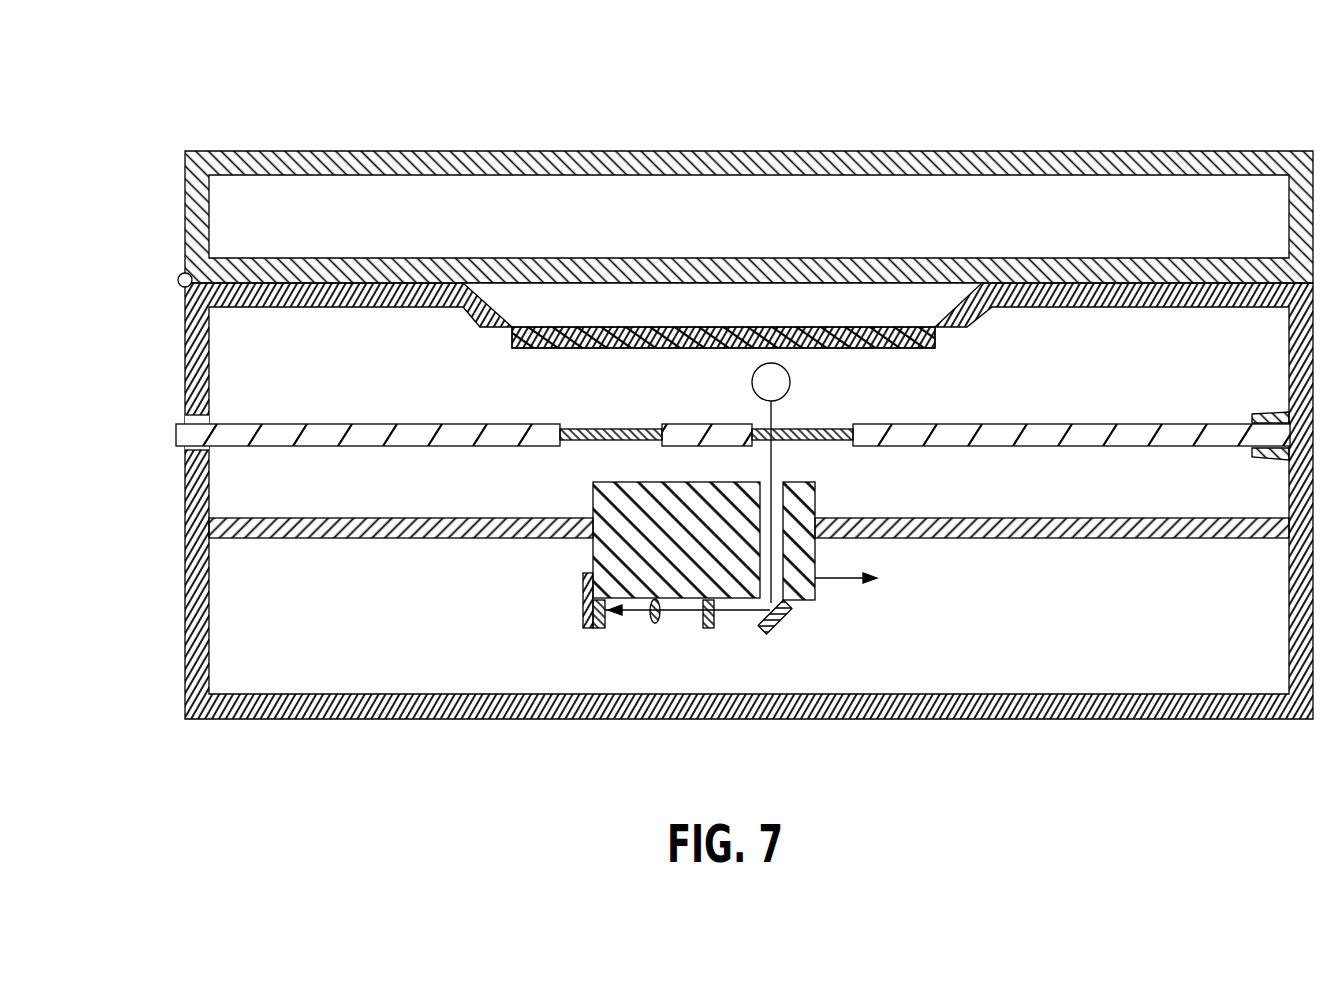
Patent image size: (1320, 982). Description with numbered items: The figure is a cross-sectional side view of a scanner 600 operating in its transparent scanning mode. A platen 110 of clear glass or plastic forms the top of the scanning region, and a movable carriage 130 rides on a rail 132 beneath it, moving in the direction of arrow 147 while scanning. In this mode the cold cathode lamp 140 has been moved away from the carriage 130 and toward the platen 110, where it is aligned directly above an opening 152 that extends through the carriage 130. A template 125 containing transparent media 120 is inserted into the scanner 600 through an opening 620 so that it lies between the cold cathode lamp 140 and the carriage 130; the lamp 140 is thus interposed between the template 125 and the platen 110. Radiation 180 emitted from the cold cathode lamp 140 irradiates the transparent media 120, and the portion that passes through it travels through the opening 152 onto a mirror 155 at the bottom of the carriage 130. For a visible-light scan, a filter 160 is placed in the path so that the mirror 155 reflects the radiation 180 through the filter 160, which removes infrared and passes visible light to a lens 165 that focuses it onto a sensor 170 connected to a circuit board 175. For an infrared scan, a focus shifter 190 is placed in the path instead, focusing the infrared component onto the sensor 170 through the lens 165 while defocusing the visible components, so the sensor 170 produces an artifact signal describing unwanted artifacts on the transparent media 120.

The scanner 600 is at (772, 103).
The platen 110 is at (528, 350).
The transparent media 120 is at (612, 428).
The template 125 is at (375, 428).
The carriage 130 is at (603, 548).
The rail 132 is at (900, 518).
The cold cathode lamp 140 is at (790, 383).
The arrow 147 is at (845, 583).
The opening 152 is at (777, 487).
The mirror 155 is at (790, 612).
The filter 160 is at (710, 627).
The focus shifter 190 is at (708, 614).
The lens 165 is at (655, 625).
The sensor 170 is at (597, 630).
The circuit board 175 is at (585, 628).
The radiation 180 is at (773, 410).
The opening 620 is at (185, 418).